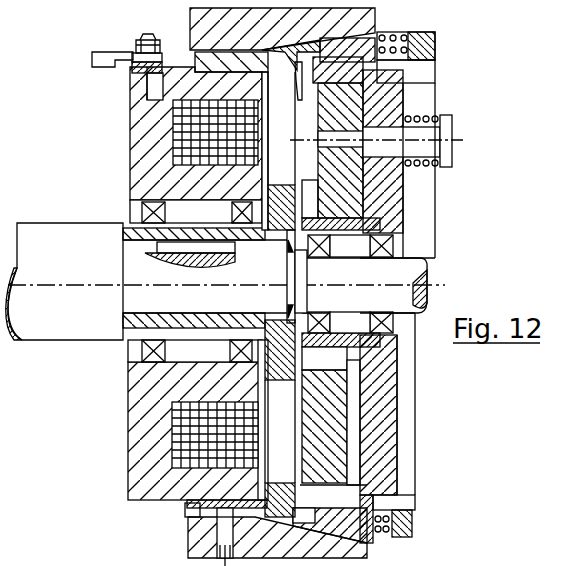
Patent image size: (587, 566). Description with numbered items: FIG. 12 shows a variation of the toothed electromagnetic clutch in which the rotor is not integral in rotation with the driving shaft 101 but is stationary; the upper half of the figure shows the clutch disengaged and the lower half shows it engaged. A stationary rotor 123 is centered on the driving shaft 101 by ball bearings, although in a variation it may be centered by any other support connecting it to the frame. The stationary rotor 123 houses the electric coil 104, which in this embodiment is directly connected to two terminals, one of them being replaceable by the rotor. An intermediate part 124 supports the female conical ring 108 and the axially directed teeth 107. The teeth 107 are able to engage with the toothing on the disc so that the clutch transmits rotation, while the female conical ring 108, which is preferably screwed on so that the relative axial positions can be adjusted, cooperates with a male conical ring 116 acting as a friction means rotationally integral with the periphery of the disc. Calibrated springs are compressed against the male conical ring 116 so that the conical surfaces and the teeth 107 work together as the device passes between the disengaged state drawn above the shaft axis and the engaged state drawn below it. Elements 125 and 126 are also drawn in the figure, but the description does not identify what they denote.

The driving shaft 101 is at (61, 237).
The electric coil 104 is at (196, 125).
The axially directed toothing 107 is at (298, 72).
The female conical ring 108 is at (198, 23).
The male conical ring 116 is at (366, 42).
The stationary rotor 123 is at (152, 168).
The intermediate part 124 is at (146, 75).
The hub 125 is at (280, 348).
The mounting bracket 126 is at (102, 62).